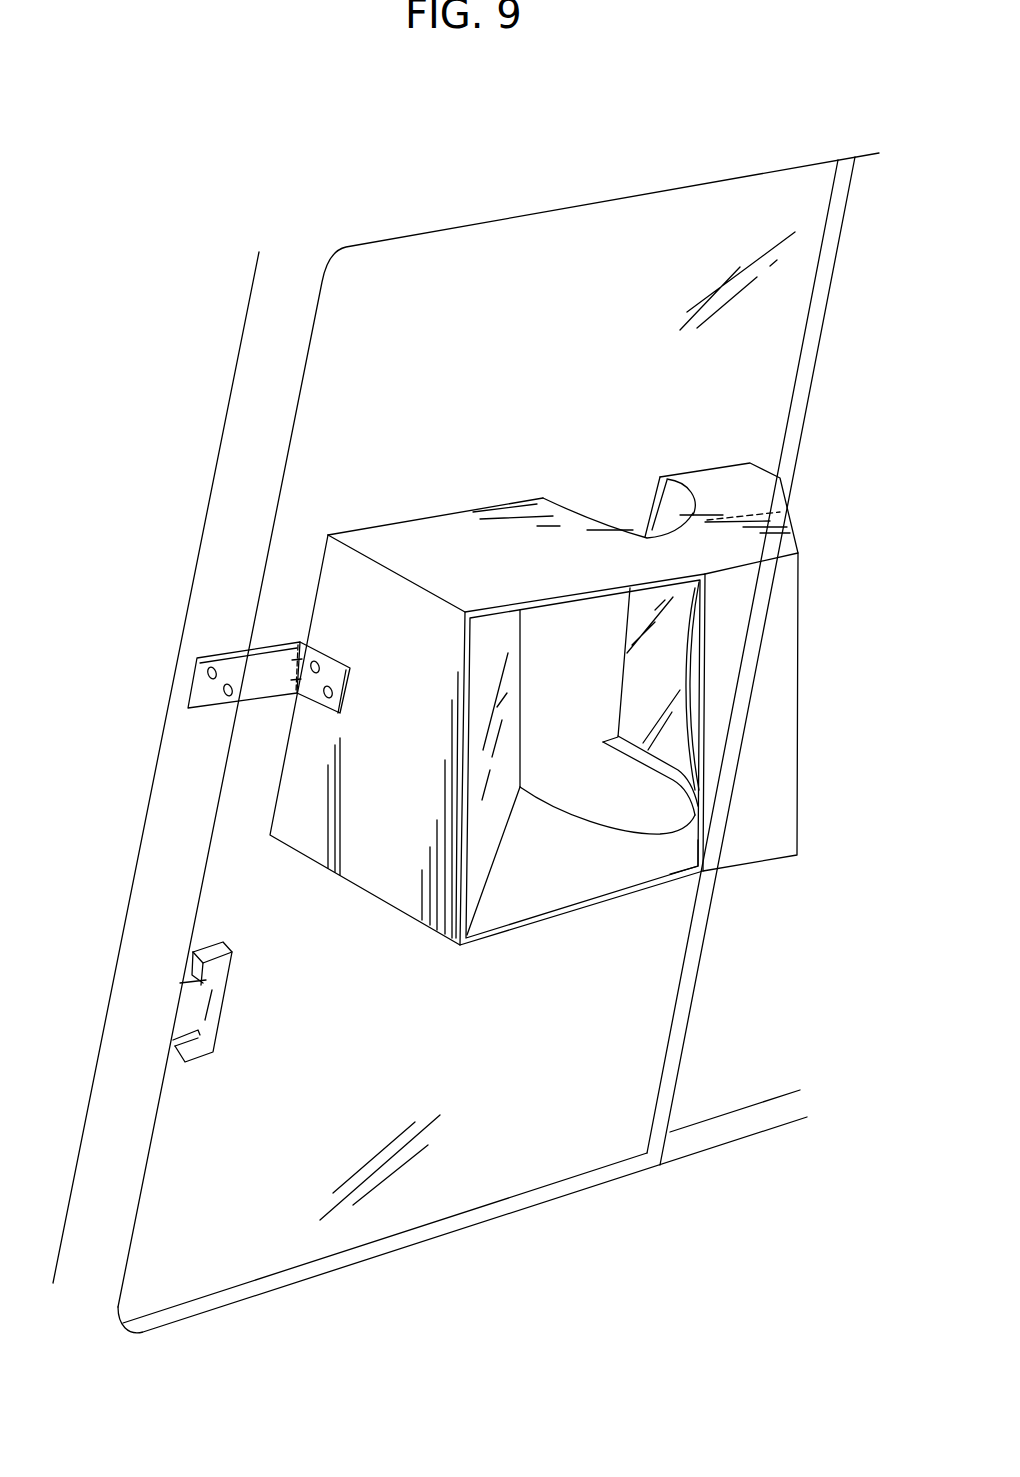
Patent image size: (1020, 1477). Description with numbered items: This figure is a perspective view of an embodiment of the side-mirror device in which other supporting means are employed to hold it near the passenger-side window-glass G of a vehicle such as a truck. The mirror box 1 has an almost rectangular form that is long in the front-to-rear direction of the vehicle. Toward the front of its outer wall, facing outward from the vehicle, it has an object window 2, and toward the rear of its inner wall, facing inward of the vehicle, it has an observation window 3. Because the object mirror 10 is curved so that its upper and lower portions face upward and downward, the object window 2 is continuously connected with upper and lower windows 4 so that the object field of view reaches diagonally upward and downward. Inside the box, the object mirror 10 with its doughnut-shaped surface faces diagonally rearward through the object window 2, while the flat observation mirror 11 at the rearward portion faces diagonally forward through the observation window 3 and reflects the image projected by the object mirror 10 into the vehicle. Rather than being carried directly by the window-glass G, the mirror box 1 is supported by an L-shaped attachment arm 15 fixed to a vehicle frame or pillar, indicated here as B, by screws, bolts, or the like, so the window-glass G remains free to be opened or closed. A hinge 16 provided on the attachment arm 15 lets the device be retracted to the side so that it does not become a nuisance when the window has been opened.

The mirror box 1 is at (780, 797).
The object window 2 is at (653, 502).
The observation window 3 is at (697, 845).
The upper and lower windows 4 is at (567, 512).
The object mirror 10 is at (670, 660).
The observation mirror 11 is at (490, 832).
The attachment arm 15 is at (210, 690).
The hinge 16 is at (293, 660).
The door body B is at (190, 760).
The window-glass G is at (382, 272).